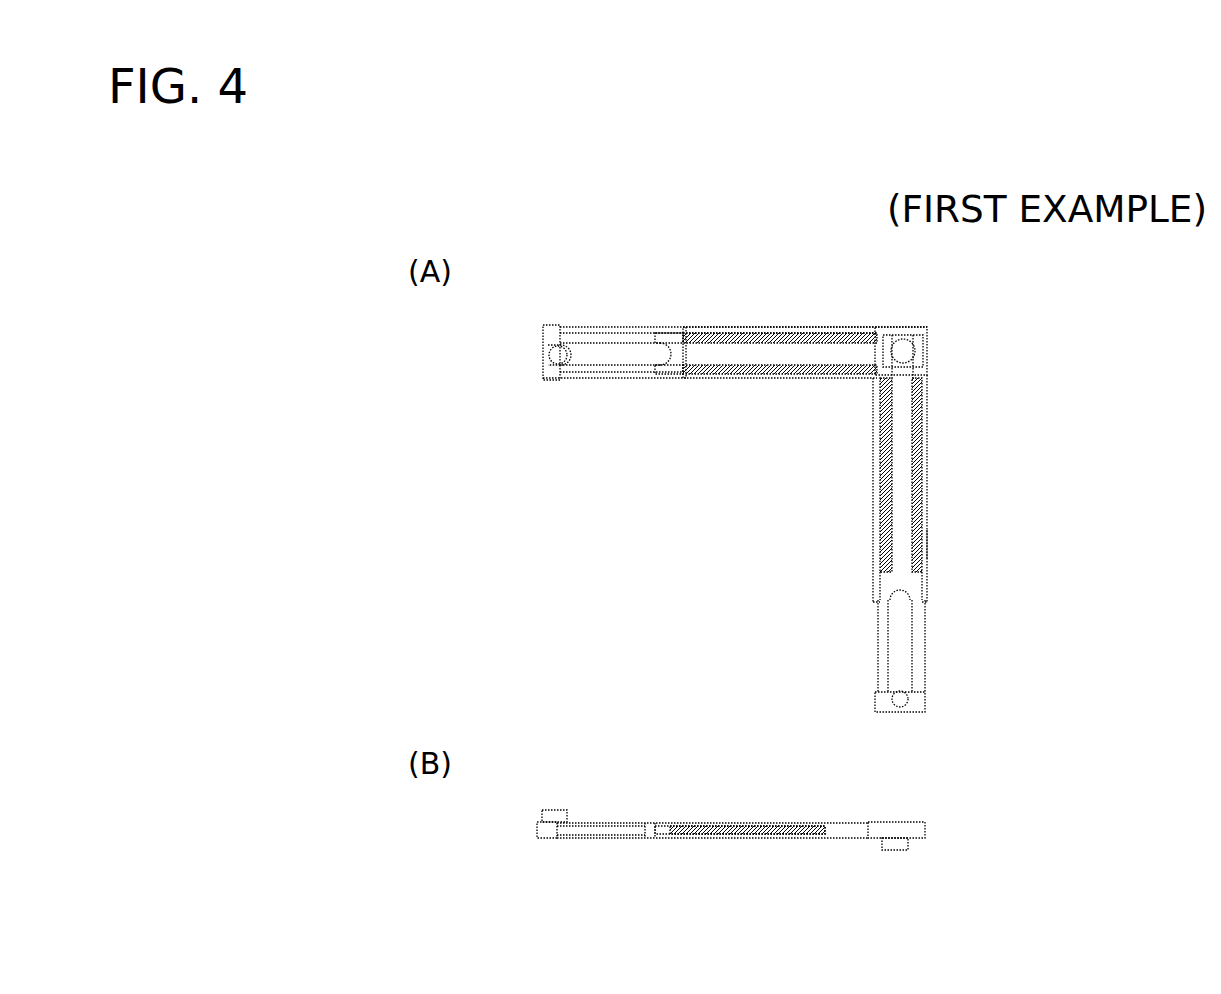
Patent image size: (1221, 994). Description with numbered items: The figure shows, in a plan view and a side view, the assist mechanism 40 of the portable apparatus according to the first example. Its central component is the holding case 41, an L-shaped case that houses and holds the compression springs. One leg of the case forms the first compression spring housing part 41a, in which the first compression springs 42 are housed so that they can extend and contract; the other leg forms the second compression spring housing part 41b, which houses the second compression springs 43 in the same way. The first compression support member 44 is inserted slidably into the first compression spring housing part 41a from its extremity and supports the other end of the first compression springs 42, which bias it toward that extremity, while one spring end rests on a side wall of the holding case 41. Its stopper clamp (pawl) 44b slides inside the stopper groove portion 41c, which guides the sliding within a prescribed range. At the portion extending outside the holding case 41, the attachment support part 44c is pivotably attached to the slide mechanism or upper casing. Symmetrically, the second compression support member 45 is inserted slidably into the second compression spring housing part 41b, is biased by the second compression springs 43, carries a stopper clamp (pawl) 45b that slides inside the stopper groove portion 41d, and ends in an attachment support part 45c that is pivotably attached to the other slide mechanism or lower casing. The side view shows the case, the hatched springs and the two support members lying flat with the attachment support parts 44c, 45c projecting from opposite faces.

The assist mechanism 40 is at (952, 294).
The holding case 41 is at (898, 352).
The first compression spring housing part 41a is at (815, 327).
The second compression spring housing part 41b is at (925, 455).
The stopper groove portion 41c is at (700, 330).
The stopper groove portion 41d is at (925, 543).
The first compression springs 42 is at (785, 333).
The second compression springs 43 is at (917, 485).
The first compression support member 44 is at (548, 338).
The stopper clamp (pawl) 44b is at (682, 327).
The attachment support part 44c is at (556, 357).
The second compression support member 45 is at (920, 705).
The stopper clamp (pawl) 45b is at (923, 575).
The attachment support part 45c is at (897, 690).